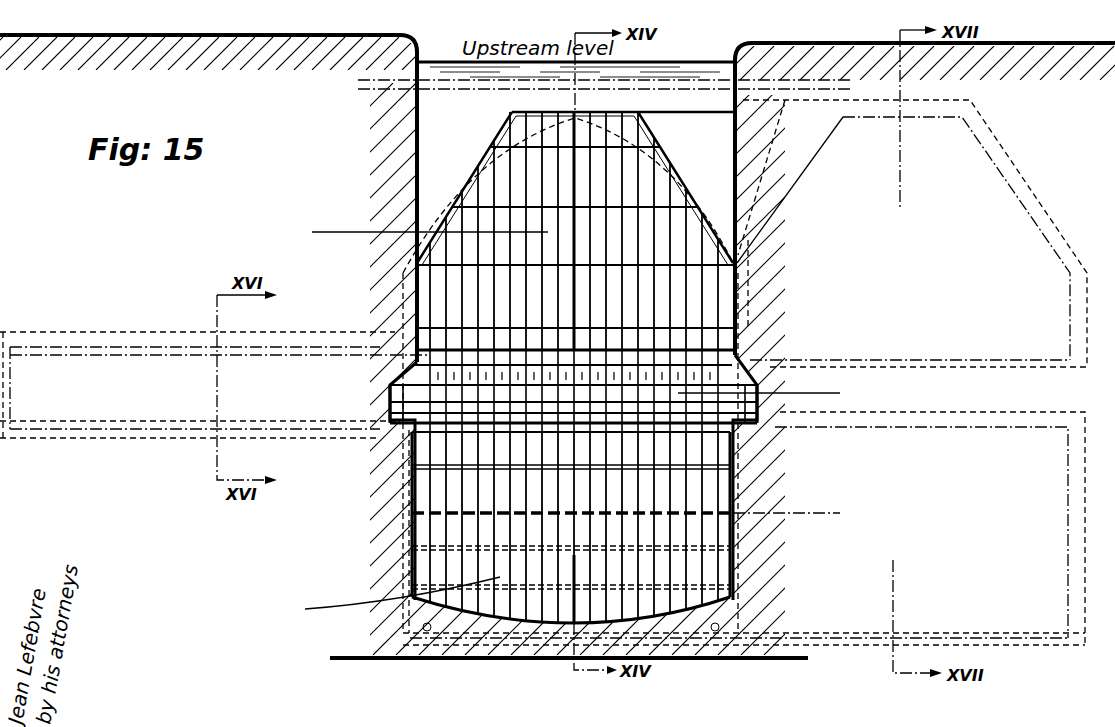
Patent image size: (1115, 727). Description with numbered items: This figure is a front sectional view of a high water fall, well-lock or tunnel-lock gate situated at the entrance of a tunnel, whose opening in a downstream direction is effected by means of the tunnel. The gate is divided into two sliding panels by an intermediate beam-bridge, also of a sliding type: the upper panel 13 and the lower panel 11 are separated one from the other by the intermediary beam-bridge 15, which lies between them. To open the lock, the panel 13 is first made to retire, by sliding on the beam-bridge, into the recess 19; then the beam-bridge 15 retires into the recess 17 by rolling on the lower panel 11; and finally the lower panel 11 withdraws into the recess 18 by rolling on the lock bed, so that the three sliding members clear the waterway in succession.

The lower panel 11 is at (450, 497).
The upper panel 13 is at (660, 191).
The intermediary beam-bridge 15 is at (443, 400).
The recess 17 is at (128, 405).
The recess 18 is at (1038, 457).
The recess 19 is at (997, 209).